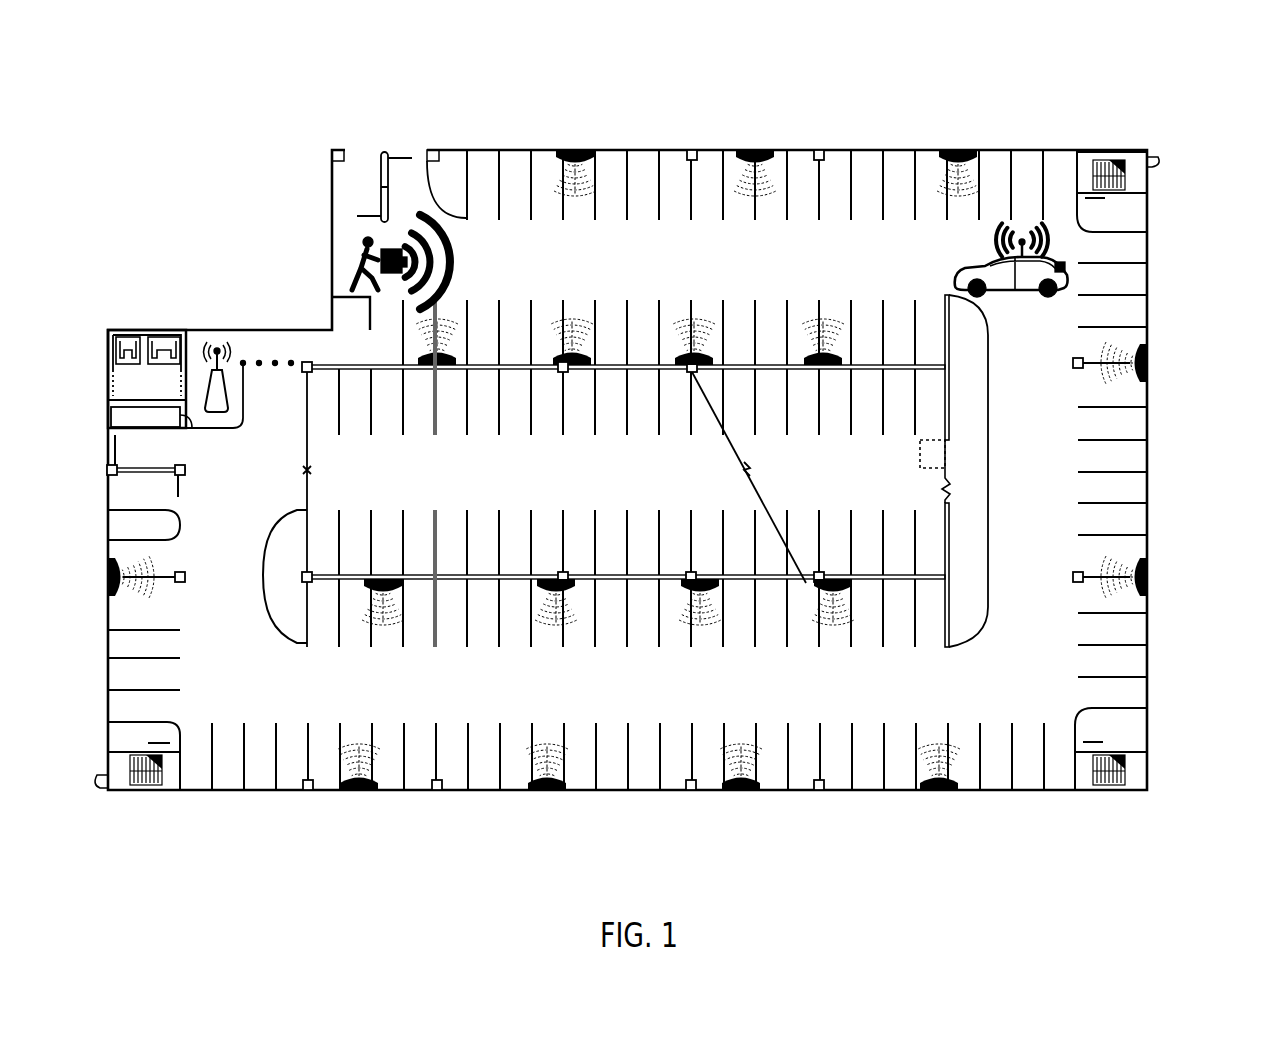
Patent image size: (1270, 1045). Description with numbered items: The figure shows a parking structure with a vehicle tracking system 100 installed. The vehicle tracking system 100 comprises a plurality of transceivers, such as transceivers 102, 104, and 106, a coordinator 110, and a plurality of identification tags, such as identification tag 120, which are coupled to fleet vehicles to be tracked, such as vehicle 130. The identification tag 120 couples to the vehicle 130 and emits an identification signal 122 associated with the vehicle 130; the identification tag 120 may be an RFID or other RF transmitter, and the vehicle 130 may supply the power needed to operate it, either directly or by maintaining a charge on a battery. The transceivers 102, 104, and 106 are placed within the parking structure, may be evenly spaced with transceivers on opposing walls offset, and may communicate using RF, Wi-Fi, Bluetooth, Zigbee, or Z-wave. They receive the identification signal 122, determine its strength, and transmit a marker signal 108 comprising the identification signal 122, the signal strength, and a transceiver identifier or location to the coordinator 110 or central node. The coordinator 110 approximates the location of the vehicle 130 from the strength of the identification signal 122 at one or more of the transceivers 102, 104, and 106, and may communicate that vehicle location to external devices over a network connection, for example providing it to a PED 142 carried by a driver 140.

The vehicle tracking system 100 is at (1125, 86).
The transceiver 102 is at (418, 373).
The transceiver 104 is at (558, 162).
The transceiver 106 is at (560, 372).
The marker signal 108 is at (578, 202).
The coordinator 110 is at (210, 378).
The identification tag 120 is at (990, 253).
The identification signal 122 is at (992, 227).
The vehicle 130 is at (1063, 267).
The driver 140 is at (366, 249).
The PED 142 is at (388, 250).